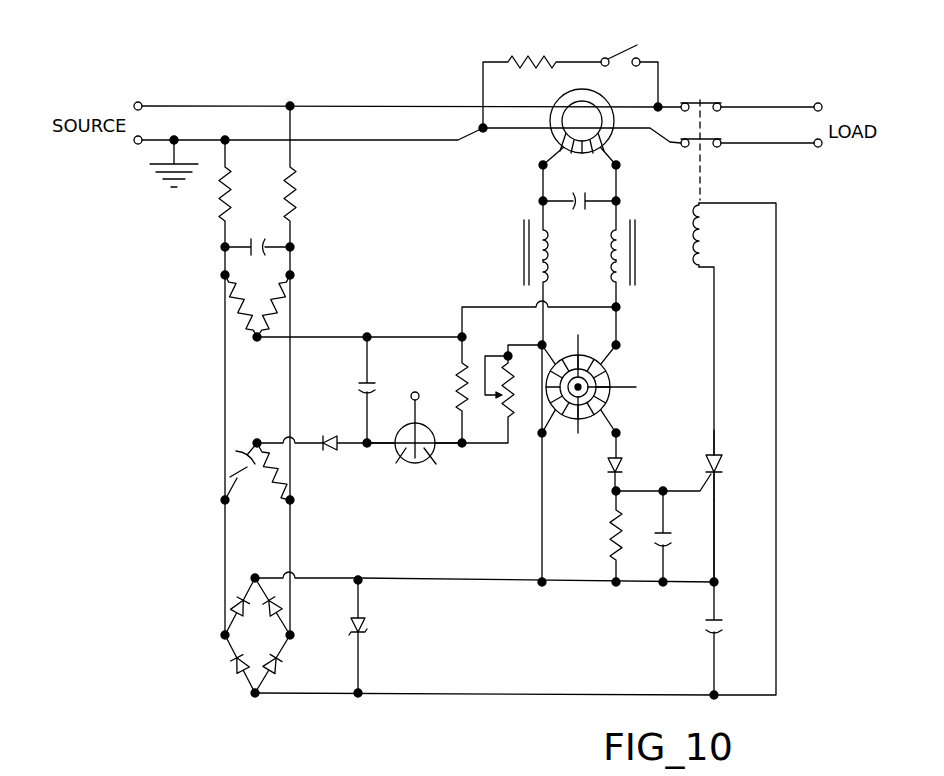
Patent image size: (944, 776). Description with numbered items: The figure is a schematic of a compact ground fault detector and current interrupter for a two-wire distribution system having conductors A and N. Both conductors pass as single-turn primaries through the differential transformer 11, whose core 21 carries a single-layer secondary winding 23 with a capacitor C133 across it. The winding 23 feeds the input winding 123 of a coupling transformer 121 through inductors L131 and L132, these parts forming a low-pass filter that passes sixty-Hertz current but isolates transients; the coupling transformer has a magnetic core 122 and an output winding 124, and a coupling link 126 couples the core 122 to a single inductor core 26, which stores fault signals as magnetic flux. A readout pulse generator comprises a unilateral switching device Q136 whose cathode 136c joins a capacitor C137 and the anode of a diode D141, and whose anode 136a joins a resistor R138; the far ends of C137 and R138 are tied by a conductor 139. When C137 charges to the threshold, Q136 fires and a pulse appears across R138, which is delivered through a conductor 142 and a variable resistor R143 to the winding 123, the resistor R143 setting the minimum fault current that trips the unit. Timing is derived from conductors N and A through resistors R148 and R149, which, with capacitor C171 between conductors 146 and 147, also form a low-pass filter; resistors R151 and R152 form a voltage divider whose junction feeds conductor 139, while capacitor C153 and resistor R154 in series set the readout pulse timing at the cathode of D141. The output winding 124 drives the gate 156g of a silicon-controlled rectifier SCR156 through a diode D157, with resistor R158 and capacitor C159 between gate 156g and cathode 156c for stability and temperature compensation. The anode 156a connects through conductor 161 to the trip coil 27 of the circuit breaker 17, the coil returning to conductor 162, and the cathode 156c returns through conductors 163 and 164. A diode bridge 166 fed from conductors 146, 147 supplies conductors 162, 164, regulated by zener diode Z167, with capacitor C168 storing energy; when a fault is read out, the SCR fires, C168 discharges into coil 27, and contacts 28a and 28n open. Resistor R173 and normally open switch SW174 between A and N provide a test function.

The conductor A is at (378, 105).
The conductor N is at (395, 140).
The differential transformer 11 is at (530, 144).
The circuit breaker or relay 17 is at (735, 183).
The differential transformer core 21 is at (583, 97).
The secondary winding 23 is at (608, 152).
The inductor core 26 is at (561, 380).
The trip coil 27 is at (690, 236).
The contact 28a is at (707, 102).
The contact 28n is at (719, 140).
The coupling transformer 121 is at (624, 364).
The coupling transformer core 122 is at (612, 399).
The input winding 123 is at (578, 345).
The output winding 124 is at (575, 429).
The coupling link 126 is at (631, 386).
The anode 136a is at (461, 460).
The cathode 136c is at (397, 450).
The conductor 139 is at (405, 334).
The conductor 142 is at (495, 306).
The conductor 146 is at (225, 405).
The conductor 147 is at (291, 540).
The anode 156a is at (718, 458).
The cathode 156c is at (727, 480).
The gate 156g is at (701, 490).
The conductor 161 is at (716, 322).
The conductor 162 is at (583, 697).
The conductor 163 is at (715, 545).
The conductor 164 is at (481, 579).
The diode bridge 166 is at (244, 636).
The resistor R148 is at (220, 201).
The resistor R149 is at (300, 190).
The capacitor C171 is at (259, 240).
The resistor R151 is at (225, 311).
The resistor R152 is at (291, 295).
The capacitor C137 is at (356, 392).
The diode D141 is at (331, 434).
The resistor R138 is at (457, 386).
The variable resistor R143 is at (502, 407).
The unilateral switching device Q136 is at (397, 471).
The capacitor C153 is at (225, 467).
The resistor R154 is at (292, 470).
The inductor L131 is at (579, 243).
The inductor L132 is at (579, 302).
The capacitor C133 is at (603, 190).
The diode D157 is at (628, 470).
The resistor R158 is at (586, 536).
The capacitor C159 is at (690, 531).
The silicon-controlled rectifier SCR156 is at (743, 462).
The capacitor C168 is at (701, 625).
The zener diode Z167 is at (369, 630).
The resistor R173 is at (525, 60).
The normally open switch SW174 is at (629, 47).